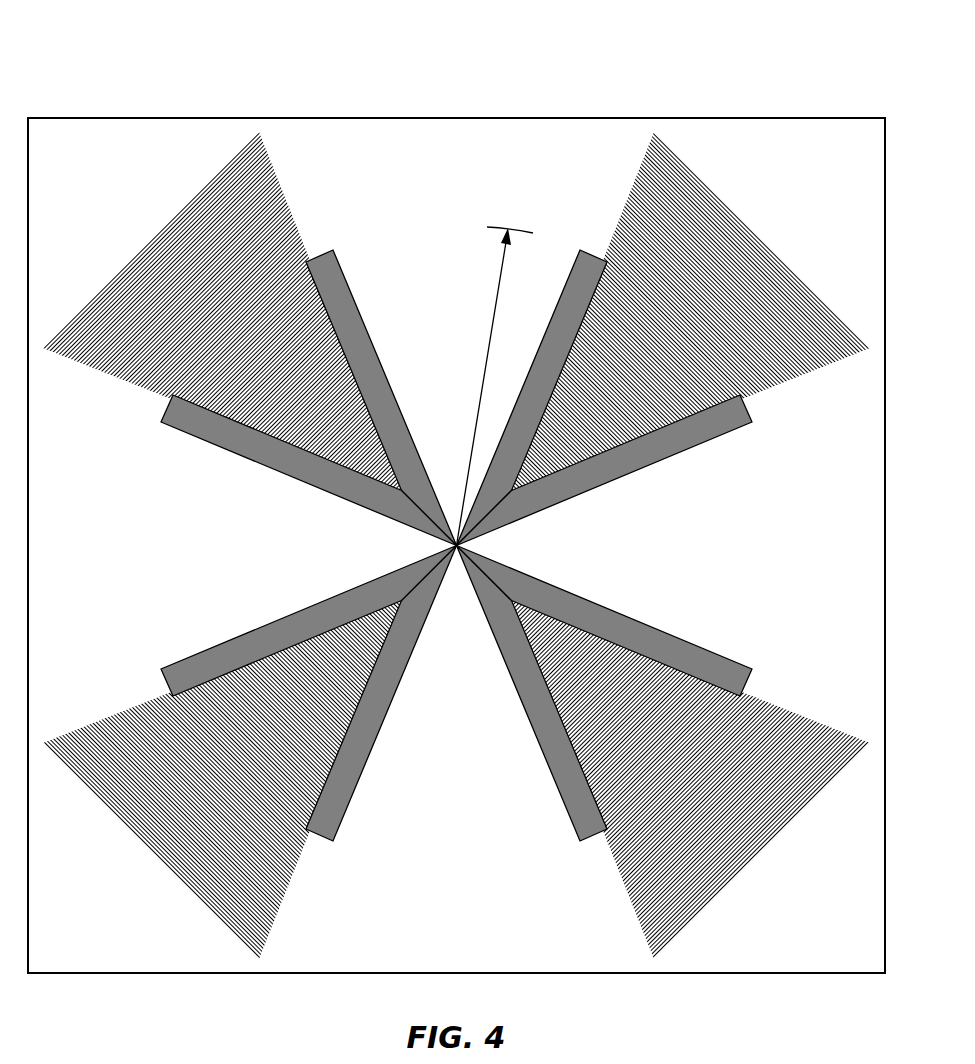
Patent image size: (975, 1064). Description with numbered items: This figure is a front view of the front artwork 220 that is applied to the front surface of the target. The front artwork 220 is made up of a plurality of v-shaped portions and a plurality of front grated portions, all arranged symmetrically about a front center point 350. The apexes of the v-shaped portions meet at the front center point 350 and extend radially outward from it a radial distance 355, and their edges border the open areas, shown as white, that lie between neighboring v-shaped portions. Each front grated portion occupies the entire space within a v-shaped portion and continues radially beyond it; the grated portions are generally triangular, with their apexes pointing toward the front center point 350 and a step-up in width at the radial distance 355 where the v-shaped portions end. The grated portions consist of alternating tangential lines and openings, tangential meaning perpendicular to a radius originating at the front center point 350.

The front artwork 220 is at (83, 98).
The front center point 350 is at (453, 546).
The radial distance 355 is at (498, 282).